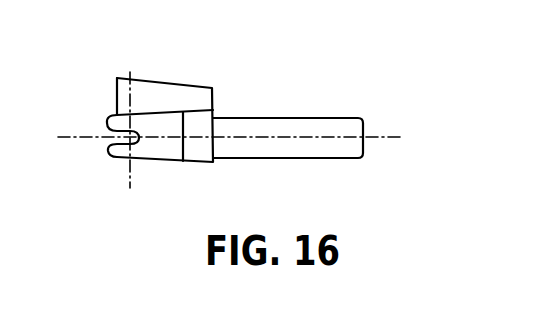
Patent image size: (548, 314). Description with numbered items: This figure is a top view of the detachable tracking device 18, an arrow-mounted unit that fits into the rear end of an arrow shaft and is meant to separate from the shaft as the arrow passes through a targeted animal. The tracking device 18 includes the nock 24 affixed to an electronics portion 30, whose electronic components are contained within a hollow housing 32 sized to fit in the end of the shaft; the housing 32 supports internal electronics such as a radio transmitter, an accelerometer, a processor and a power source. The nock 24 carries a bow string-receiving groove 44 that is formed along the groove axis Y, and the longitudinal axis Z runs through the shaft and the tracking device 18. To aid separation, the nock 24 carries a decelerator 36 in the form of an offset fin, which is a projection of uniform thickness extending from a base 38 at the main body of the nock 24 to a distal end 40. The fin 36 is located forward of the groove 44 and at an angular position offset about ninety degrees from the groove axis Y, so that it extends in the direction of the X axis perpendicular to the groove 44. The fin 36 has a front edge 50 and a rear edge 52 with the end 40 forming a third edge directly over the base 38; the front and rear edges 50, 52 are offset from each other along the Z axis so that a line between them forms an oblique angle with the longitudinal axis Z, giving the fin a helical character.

The tracking device 18 is at (83, 68).
The nock 24 is at (193, 164).
The electronics portion 30 is at (307, 117).
The housing 32 is at (288, 150).
The decelerator 36 is at (180, 97).
The base 38 is at (168, 113).
The distal end 40 is at (196, 86).
The bow string-receiving groove 44 is at (114, 136).
The front edge 50 is at (217, 95).
The rear edge 52 is at (116, 97).
The X-axis X is at (131, 85).
The groove axis Y is at (130, 138).
The longitudinal axis Z is at (380, 132).